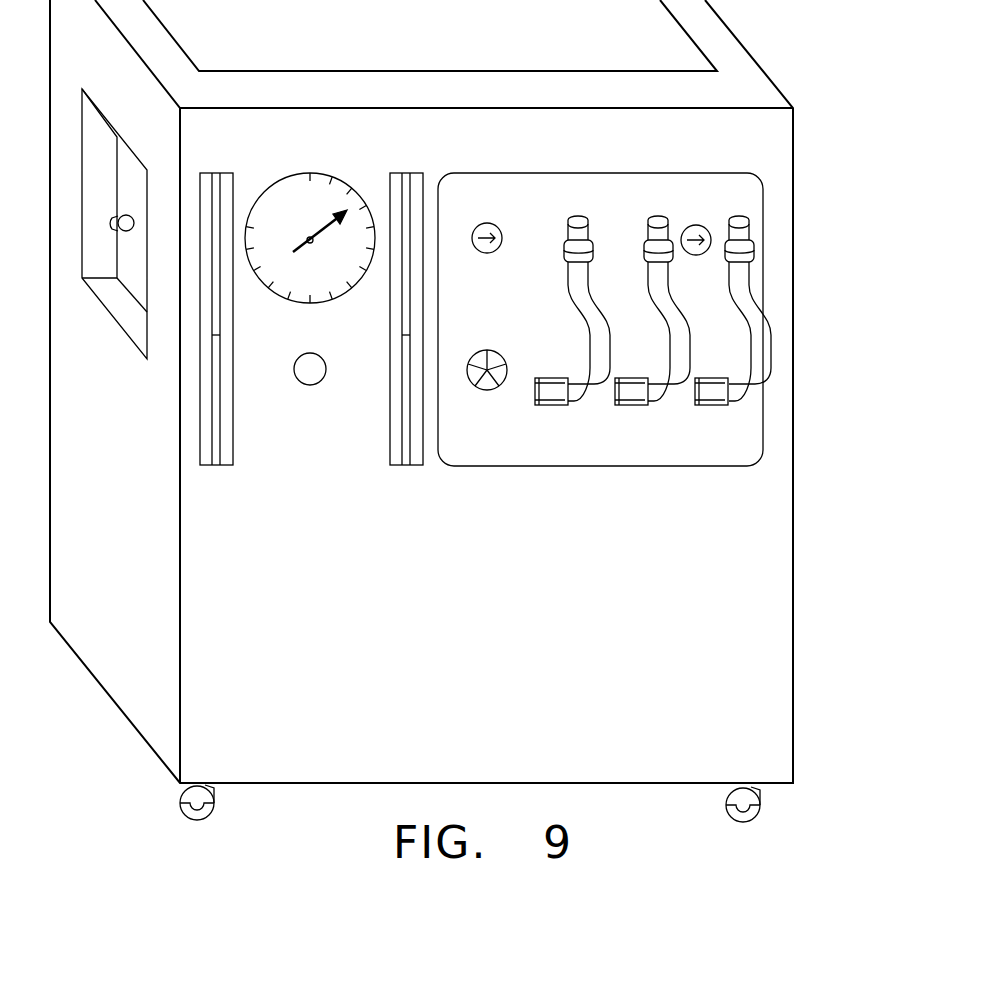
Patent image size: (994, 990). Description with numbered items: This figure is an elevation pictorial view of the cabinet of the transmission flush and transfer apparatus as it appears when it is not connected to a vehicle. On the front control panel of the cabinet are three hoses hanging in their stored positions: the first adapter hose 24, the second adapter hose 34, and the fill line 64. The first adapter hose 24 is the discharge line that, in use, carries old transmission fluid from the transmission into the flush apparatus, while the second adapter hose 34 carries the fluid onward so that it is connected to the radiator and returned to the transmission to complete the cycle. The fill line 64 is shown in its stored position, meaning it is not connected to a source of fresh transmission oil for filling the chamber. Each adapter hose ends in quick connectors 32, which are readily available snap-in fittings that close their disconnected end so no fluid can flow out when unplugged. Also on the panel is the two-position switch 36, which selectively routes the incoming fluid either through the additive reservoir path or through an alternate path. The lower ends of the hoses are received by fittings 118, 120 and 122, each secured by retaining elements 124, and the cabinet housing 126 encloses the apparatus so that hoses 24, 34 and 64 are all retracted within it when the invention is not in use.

The first adapter hose 24 is at (570, 297).
The quick connectors 32 is at (739, 216).
The second adapter hose 34 is at (648, 292).
The two-position switch 36 is at (495, 227).
The fill line 64 is at (766, 322).
The first fitting 118 is at (565, 405).
The second fitting 120 is at (645, 405).
The third fitting 122 is at (727, 405).
The retaining clamps 124 is at (555, 378).
The cabinet 126 is at (740, 550).